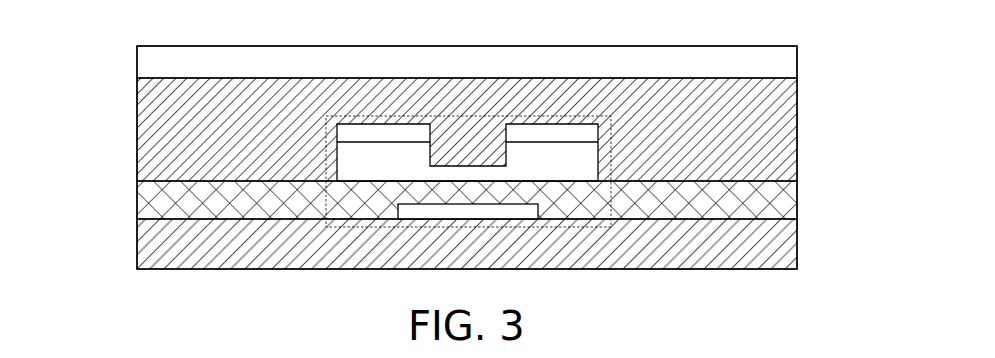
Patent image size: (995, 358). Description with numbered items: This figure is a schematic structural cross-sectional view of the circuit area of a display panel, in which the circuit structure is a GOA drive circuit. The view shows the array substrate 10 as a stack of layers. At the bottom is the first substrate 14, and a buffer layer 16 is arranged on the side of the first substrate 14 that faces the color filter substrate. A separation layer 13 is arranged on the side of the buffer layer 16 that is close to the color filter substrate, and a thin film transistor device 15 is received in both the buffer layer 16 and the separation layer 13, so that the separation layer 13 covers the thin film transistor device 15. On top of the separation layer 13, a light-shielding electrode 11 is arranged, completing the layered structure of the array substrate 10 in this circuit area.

The array substrate 10 is at (103, 162).
The light-shielding electrode 11 is at (797, 63).
The separation layer 13 is at (797, 117).
The first substrate 14 is at (797, 242).
The thin film transistor device 15 is at (598, 162).
The buffer layer 16 is at (797, 200).